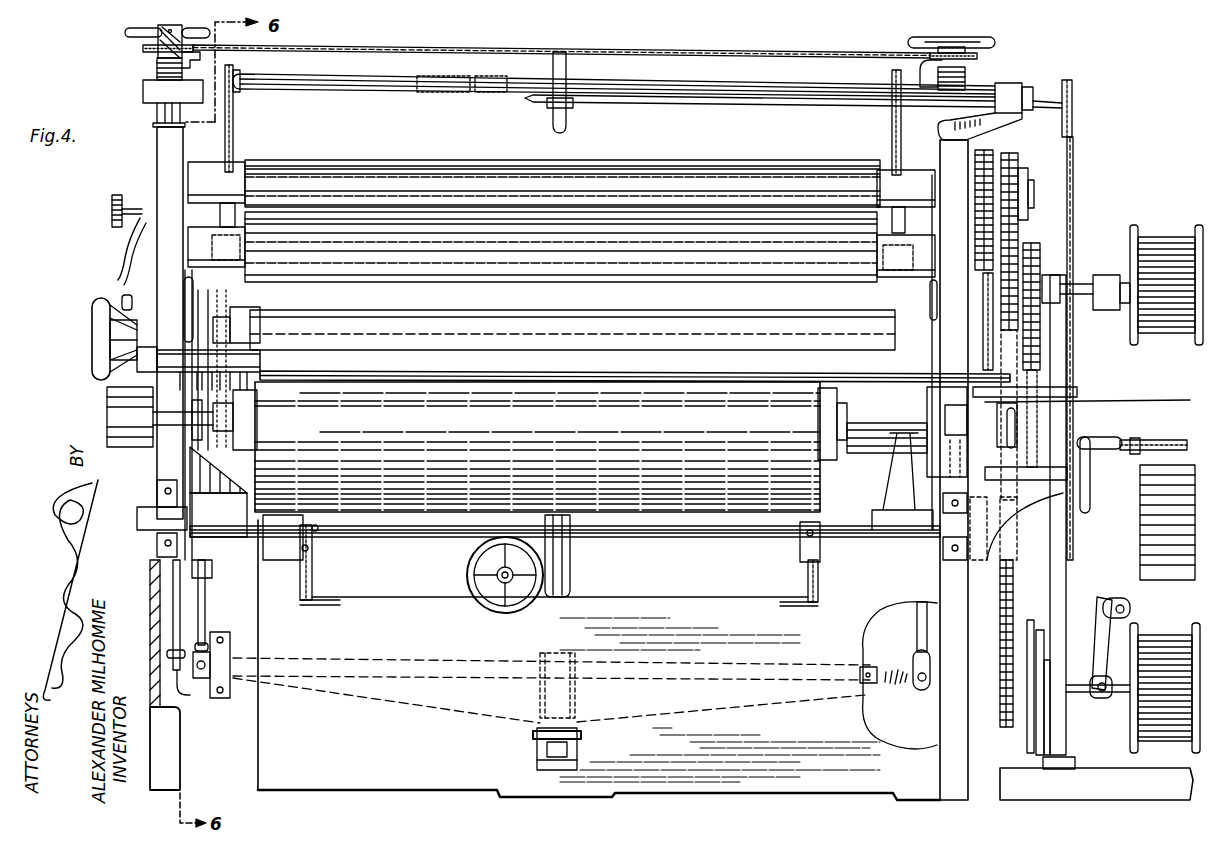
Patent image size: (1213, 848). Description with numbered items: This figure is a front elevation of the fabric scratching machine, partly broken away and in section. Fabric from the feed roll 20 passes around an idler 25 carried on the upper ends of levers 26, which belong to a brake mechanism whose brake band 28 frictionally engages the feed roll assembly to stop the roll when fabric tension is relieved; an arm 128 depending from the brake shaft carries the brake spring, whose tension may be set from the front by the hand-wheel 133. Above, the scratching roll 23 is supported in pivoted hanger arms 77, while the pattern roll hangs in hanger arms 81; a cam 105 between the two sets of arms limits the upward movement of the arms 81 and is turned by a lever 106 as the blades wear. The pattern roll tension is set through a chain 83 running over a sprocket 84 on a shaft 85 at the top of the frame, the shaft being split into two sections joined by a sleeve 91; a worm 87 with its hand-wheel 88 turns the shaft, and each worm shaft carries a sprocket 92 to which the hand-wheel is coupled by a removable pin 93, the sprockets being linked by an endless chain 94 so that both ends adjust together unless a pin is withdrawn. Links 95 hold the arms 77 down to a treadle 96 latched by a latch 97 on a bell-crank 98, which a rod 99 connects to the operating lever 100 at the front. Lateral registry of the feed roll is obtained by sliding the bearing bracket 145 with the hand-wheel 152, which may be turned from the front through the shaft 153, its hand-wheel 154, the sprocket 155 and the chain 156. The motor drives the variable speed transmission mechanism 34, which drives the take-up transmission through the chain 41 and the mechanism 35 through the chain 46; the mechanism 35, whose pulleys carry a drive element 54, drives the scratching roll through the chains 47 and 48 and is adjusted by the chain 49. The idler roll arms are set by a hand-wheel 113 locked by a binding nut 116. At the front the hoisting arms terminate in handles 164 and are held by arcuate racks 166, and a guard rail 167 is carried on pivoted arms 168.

The feed roll 20 is at (790, 430).
The scratching roll 23 is at (722, 162).
The idler 25 is at (842, 305).
The levers 26 is at (880, 475).
The brake band 28 is at (212, 568).
The variable speed transmission mechanism 34 is at (1128, 575).
The variable speed transmission mechanism 35 is at (1122, 265).
The chain 41 is at (1000, 628).
The chain 46 is at (1040, 275).
The chain 47 is at (1018, 232).
The chain 48 is at (990, 150).
The chain 49 is at (1035, 260).
The drive element 54 is at (1163, 237).
The hanger arms 77 is at (300, 170).
The hanger arms 81 is at (223, 262).
The chain 83 is at (234, 134).
The sprocket 84 is at (241, 74).
The shaft 85 is at (352, 78).
The worm 87 is at (157, 75).
The hand-wheel 88 is at (125, 33).
The sleeve 91 is at (448, 76).
The sprocket 92 is at (143, 50).
The removable pin 93 is at (200, 45).
The endless chain 94 is at (405, 46).
The links 95 is at (205, 620).
The treadle 96 is at (537, 740).
The latch 97 is at (575, 718).
The bell-crank 98 is at (212, 698).
The rod 99 is at (180, 605).
The operating lever 100 is at (184, 282).
The cam 105 is at (250, 217).
The lever 106 is at (118, 230).
The hand-wheel 113 is at (105, 368).
The binding nut 116 is at (92, 333).
The arm 128 is at (570, 570).
The hand-wheel 133 is at (467, 577).
The bearing bracket 145 is at (927, 410).
The hand-wheel 152 is at (1085, 437).
The shaft 153 is at (660, 104).
The hand-wheel 154 is at (553, 115).
The sprocket 155 is at (1064, 80).
The chain 156 is at (1073, 166).
The handles 164 is at (318, 547).
The arcuate racks 166 is at (318, 575).
The guard rail 167 is at (622, 363).
The pivoted arms 168 is at (148, 472).